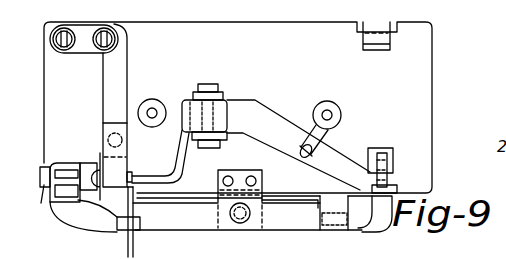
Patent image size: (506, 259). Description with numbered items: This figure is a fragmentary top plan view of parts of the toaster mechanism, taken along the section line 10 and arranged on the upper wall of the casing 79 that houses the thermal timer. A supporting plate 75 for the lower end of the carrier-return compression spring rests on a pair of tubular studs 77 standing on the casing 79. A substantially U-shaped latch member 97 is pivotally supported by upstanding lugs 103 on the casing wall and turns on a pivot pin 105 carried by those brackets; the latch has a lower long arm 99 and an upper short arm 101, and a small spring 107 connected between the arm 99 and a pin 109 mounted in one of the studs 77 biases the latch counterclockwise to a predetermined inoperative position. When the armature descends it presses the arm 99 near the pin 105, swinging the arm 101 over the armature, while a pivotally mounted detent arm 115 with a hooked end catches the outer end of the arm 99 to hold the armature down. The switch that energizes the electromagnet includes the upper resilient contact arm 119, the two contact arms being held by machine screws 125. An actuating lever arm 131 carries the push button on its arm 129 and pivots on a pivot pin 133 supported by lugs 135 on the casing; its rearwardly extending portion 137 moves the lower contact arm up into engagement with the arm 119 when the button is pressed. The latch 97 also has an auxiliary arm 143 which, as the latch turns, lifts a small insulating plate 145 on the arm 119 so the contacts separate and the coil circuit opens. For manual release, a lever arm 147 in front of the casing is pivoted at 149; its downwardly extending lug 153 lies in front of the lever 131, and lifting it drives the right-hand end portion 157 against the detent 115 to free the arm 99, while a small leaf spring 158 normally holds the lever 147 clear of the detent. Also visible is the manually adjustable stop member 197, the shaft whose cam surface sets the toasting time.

The section line 10 is at (24, 200).
The supporting plate 75 is at (354, 256).
The tubular studs 77 is at (153, 98).
The casing 79 is at (434, 61).
The latch member 97 is at (274, 121).
The lower long arm 99 is at (348, 157).
The upper short arm 101 is at (247, 228).
The upstanding lugs 103 is at (216, 94).
The pivot pin 105 is at (183, 150).
The small spring 107 is at (297, 151).
The pin 109 is at (350, 127).
The detent arm 115 is at (389, 163).
The upper resilient contact arm 119 is at (130, 68).
The machine screws 125 is at (93, 53).
The arm 129 is at (134, 249).
The actuating lever arm 131 is at (83, 221).
The pivot pin 133 is at (62, 165).
The lugs 135 is at (46, 197).
The rearwardly extending portion 137 is at (100, 162).
The auxiliary arm 143 is at (131, 172).
The small plate 145 is at (134, 160).
The lever arm 147 is at (307, 231).
The pivot 149 is at (246, 230).
The downwardly-extending lug 153 is at (116, 226).
The right-hand end portion 157 is at (395, 188).
The small leaf spring 158 is at (290, 194).
The manually-adjustable stop member 197 is at (362, 220).